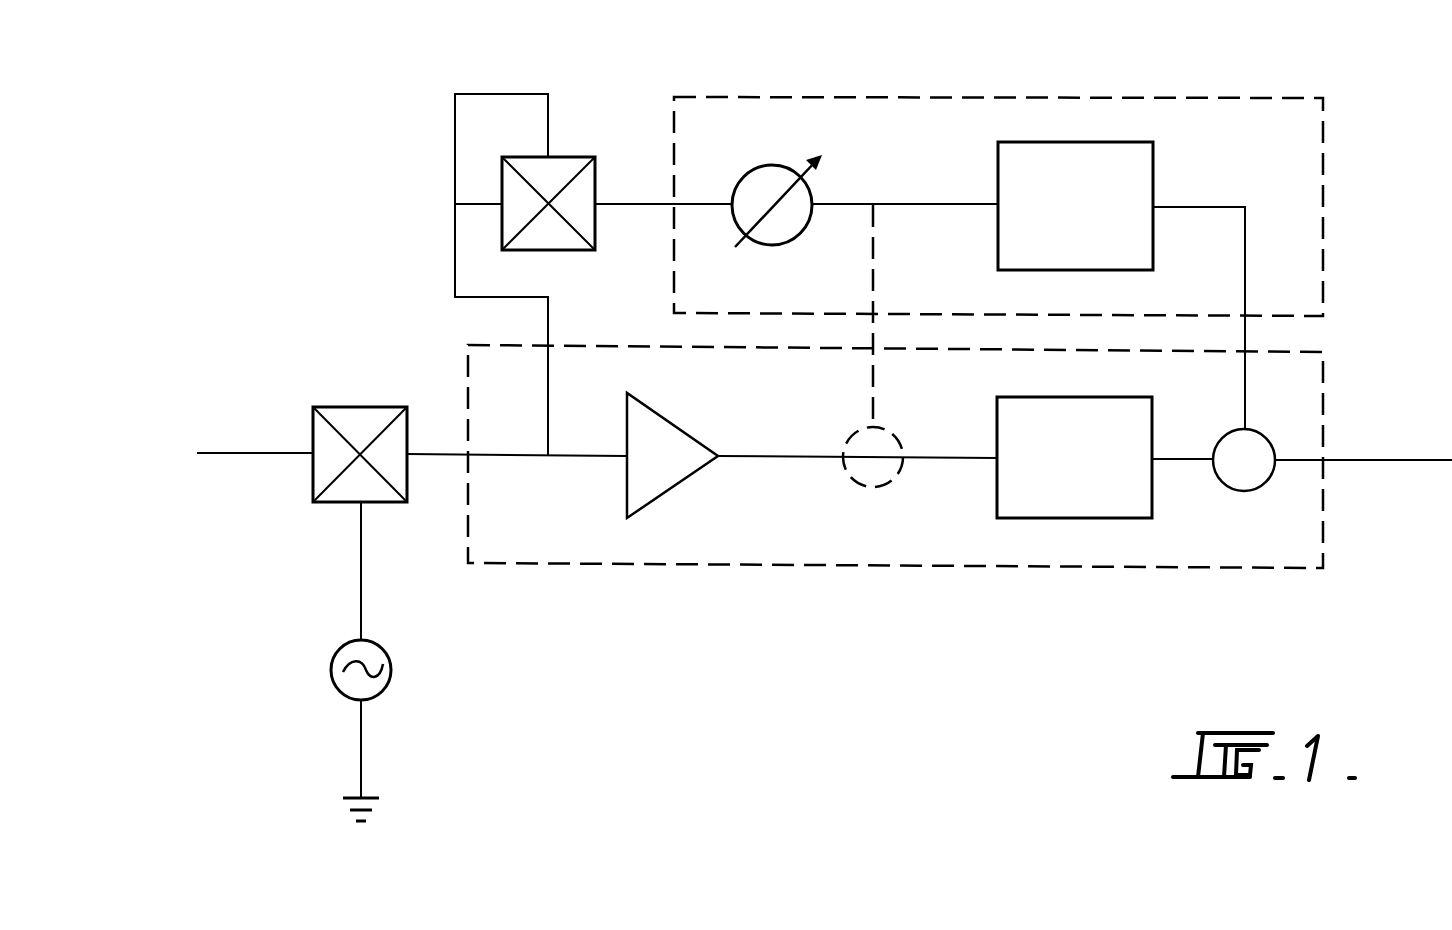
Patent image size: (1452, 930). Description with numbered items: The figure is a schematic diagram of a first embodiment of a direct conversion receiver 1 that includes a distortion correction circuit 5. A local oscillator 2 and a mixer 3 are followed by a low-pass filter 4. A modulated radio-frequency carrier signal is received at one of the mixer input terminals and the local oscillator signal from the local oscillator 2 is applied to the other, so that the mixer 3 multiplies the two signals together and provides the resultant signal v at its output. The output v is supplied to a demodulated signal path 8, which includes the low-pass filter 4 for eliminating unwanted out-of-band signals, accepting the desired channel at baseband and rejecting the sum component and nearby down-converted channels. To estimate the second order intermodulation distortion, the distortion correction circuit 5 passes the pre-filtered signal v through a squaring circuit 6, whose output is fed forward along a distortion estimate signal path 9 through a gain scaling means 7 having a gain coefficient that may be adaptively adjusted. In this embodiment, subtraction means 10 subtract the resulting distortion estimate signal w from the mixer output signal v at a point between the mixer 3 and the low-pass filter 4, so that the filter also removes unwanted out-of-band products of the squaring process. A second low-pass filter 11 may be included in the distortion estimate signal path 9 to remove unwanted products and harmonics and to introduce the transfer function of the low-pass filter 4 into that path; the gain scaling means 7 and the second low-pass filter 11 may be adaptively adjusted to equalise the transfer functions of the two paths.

The direct conversion receiver 1 is at (407, 262).
The local oscillator 2 is at (331, 668).
The mixer 3 is at (325, 407).
The low-pass filter 4 is at (1060, 518).
The distortion correction circuit 5 is at (418, 86).
The squaring circuit 6 is at (593, 157).
The gain scaling means 7 is at (763, 165).
The demodulated signal path 8 is at (842, 568).
The distortion estimate signal path 9 is at (968, 97).
The subtraction means 10 is at (881, 489).
The second low-pass filter 11 is at (1066, 183).